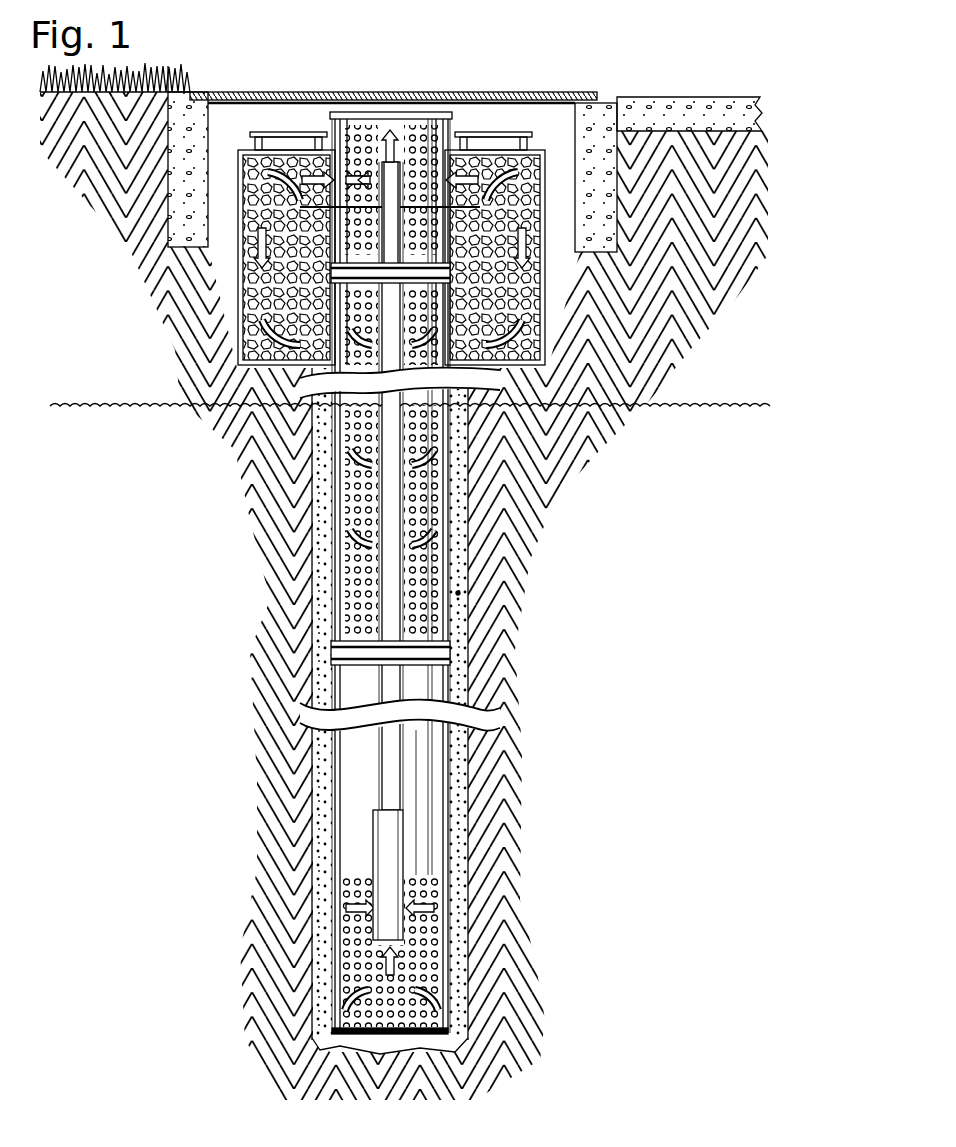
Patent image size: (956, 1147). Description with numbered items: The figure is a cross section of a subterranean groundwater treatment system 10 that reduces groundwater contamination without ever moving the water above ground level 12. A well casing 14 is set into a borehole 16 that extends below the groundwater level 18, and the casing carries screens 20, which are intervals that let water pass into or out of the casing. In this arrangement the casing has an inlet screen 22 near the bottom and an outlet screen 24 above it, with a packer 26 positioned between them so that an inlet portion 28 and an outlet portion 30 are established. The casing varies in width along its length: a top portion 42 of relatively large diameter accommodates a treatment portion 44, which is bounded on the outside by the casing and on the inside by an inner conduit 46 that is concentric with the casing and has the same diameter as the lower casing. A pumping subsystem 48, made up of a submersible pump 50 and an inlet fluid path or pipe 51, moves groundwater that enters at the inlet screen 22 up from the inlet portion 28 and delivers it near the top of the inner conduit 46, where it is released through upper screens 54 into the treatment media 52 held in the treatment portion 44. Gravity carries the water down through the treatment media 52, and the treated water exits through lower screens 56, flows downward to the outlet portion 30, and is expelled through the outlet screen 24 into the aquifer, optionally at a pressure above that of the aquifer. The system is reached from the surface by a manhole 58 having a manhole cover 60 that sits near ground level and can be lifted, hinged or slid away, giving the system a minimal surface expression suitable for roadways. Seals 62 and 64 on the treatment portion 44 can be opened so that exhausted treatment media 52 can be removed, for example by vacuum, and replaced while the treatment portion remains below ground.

The subterranean groundwater treatment system 10 is at (237, 48).
The ground level 12 is at (657, 97).
The well casing 14 is at (442, 738).
The borehole 16 is at (312, 480).
The groundwater level 18 is at (122, 403).
The screens 20 is at (448, 476).
The inlet screen 22 is at (450, 965).
The outlet screen 24 is at (467, 556).
The packer 26 is at (376, 652).
The inlet portion 28 is at (470, 944).
The outlet portion 30 is at (460, 592).
The top portion 42 is at (236, 256).
The treatment portion 44 is at (238, 240).
The inner conduit 46 is at (338, 246).
The pumping subsystem 48 is at (420, 830).
The submersible pump 50 is at (384, 862).
The inlet fluid path 51 is at (398, 260).
The treatment media 52 is at (246, 282).
The upper screens 54 is at (375, 142).
The lower screens 56 is at (348, 300).
The manhole 58 is at (285, 76).
The manhole cover 60 is at (486, 92).
The seal 62 is at (279, 132).
The seal 64 is at (487, 132).